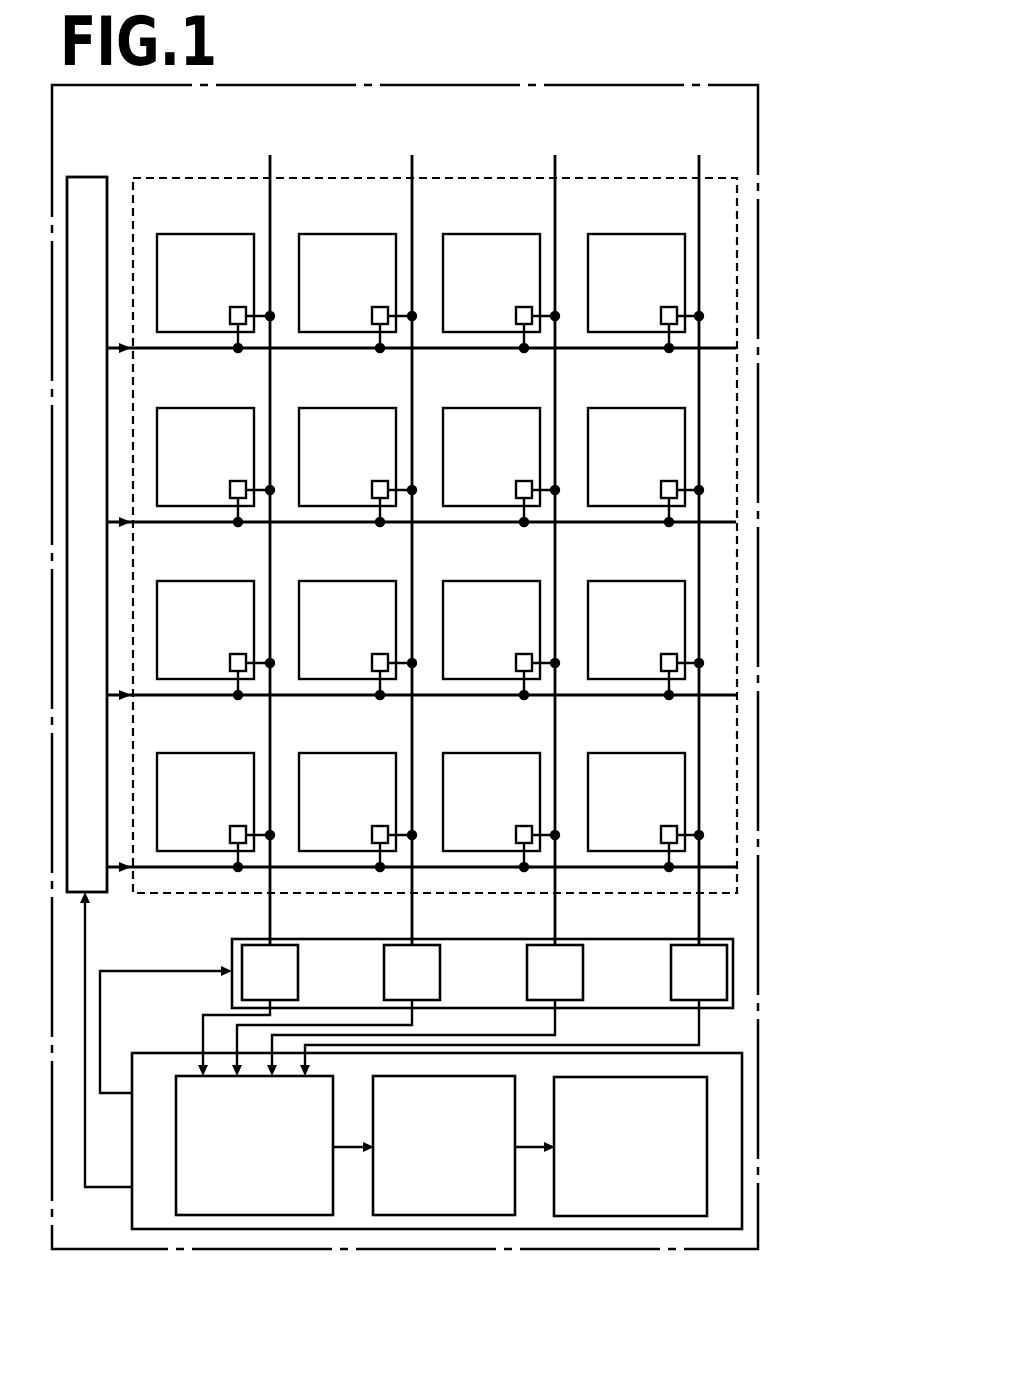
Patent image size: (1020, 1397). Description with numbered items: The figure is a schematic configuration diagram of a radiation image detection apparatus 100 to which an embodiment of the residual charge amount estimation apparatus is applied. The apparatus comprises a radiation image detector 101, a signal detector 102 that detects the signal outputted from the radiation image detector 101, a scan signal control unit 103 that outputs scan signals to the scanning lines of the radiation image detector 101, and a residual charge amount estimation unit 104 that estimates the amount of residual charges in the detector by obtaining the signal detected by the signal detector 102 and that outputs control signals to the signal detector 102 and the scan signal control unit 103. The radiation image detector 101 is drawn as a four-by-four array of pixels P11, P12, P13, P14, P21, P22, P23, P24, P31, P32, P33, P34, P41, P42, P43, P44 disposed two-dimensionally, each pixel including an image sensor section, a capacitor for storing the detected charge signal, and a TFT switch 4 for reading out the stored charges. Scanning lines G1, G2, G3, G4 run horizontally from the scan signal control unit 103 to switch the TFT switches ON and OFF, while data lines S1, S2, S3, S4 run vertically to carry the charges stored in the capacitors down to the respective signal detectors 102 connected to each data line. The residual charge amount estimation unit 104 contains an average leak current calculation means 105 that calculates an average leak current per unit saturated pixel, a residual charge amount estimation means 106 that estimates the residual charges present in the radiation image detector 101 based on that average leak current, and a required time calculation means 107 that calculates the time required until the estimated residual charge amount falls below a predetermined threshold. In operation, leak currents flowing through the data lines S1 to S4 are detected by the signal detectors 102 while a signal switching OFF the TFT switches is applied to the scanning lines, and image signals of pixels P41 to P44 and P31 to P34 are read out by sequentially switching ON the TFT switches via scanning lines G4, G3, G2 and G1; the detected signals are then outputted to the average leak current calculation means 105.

The radiation image detection apparatus 100 is at (759, 113).
The radiation image detector 101 is at (737, 222).
The signal detector 102 is at (275, 945).
The scan signal control unit 103 is at (90, 176).
The residual charge amount estimation unit 104 is at (724, 1230).
The average leak current calculation means 105 is at (256, 1216).
The residual charge amount estimation means 106 is at (432, 1216).
The required time calculation means 107 is at (634, 1217).
The TFT switch 4 is at (670, 308).
The data line S1 is at (270, 168).
The data line S2 is at (412, 168).
The data line S3 is at (555, 168).
The data line S4 is at (699, 168).
The scanning line G1 is at (716, 348).
The scanning line G2 is at (716, 522).
The scanning line G3 is at (716, 695).
The scanning line G4 is at (716, 867).
The pixel P11 is at (202, 239).
The pixel P12 is at (344, 239).
The pixel P13 is at (488, 239).
The pixel P14 is at (690, 269).
The pixel P21 is at (202, 413).
The pixel P22 is at (344, 413).
The pixel P23 is at (488, 413).
The pixel P24 is at (633, 413).
The pixel P31 is at (202, 586).
The pixel P32 is at (344, 586).
The pixel P33 is at (488, 586).
The pixel P34 is at (633, 586).
The pixel P41 is at (202, 758).
The pixel P42 is at (344, 758).
The pixel P43 is at (488, 758).
The pixel P44 is at (633, 758).